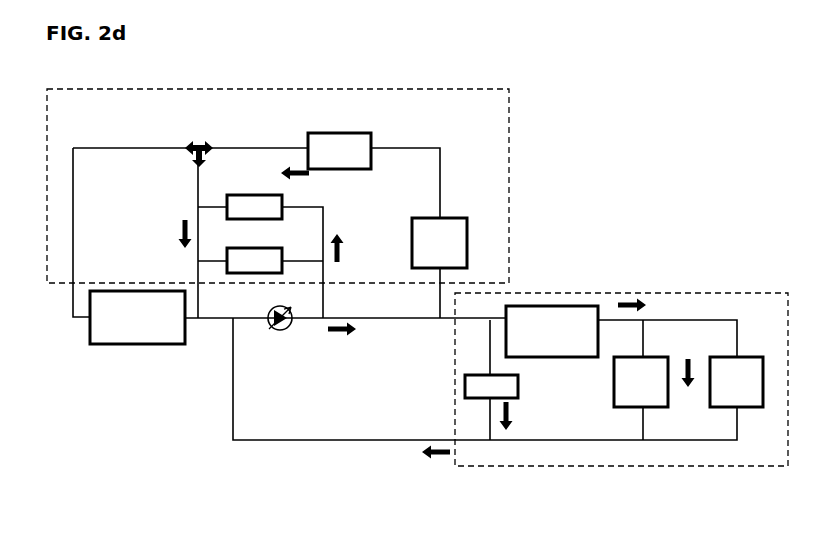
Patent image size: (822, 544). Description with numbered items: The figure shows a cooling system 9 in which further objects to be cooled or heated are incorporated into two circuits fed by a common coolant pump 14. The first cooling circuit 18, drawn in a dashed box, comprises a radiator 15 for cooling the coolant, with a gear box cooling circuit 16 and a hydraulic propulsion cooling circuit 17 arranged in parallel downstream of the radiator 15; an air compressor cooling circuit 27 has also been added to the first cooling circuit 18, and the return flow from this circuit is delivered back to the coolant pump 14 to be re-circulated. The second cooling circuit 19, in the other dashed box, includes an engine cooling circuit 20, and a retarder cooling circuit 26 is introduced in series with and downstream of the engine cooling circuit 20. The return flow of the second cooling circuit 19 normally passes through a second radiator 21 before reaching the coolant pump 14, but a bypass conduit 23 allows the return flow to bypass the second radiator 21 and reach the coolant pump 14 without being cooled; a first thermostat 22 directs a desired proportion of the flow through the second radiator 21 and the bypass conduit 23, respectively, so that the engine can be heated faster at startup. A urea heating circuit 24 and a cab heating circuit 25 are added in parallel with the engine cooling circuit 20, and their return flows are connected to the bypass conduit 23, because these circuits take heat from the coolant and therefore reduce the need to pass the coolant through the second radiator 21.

The cooling system 9 is at (582, 189).
The coolant pump 14 is at (281, 331).
The radiator 15 is at (552, 331).
The gear box cooling circuit 16 is at (641, 382).
The hydraulic propulsion cooling circuit 17 is at (736, 382).
The first cooling circuit 18 is at (723, 467).
The second cooling circuit 19 is at (509, 243).
The engine cooling circuit 20 is at (439, 243).
The second radiator 21 is at (137, 317).
The first thermostat 22 is at (201, 140).
The bypass conduit 23 is at (198, 176).
The urea heating circuit 24 is at (254, 260).
The cab heating circuit 25 is at (254, 207).
The retarder cooling circuit 26 is at (339, 151).
The air compressor cooling circuit 27 is at (491, 386).